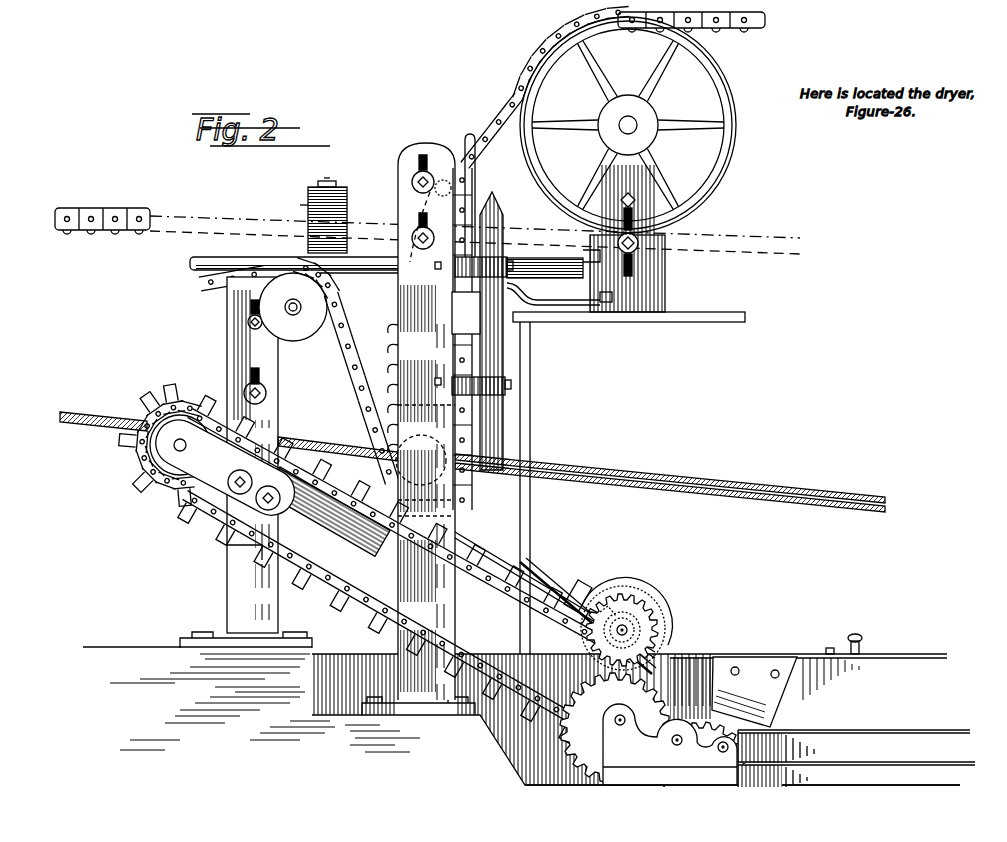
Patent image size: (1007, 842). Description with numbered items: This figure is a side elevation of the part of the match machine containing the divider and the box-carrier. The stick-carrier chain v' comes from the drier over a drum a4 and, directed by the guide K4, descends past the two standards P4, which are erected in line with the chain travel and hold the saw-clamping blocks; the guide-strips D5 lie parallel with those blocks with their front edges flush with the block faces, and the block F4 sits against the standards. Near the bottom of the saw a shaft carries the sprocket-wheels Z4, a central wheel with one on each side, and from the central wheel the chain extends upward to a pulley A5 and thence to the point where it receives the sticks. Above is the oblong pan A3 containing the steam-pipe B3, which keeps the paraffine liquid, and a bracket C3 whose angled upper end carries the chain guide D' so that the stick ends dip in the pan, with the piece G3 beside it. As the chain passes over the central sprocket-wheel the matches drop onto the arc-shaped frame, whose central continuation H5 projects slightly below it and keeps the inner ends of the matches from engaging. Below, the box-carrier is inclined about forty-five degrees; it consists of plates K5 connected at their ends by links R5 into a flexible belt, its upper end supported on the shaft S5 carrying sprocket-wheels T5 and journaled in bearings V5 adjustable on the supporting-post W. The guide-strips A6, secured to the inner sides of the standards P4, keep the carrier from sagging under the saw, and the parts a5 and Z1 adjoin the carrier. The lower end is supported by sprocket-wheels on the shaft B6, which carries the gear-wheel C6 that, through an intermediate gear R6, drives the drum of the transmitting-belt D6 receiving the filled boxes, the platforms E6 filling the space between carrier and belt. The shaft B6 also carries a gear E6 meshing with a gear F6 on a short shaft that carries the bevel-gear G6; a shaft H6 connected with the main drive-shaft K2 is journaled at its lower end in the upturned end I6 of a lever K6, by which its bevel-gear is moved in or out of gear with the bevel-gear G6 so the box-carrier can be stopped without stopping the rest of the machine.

The conveyor chain v' is at (427, 140).
The sprocket wheel a4 is at (598, 120).
The steam-pipe B3 is at (552, 251).
The guide arm G3 is at (559, 294).
The pan A3 is at (182, 275).
The standard or bracket C3 is at (347, 196).
The pipe D' is at (297, 213).
The support column W is at (246, 462).
The pulley A5 is at (300, 335).
The drive-shaft K2 is at (98, 402).
The guide-strips A6 is at (318, 533).
The standards P4 is at (421, 421).
The sprocket-wheels Z4 is at (425, 495).
The guide-strips D5 is at (482, 356).
The guide K4 is at (482, 295).
The clamp block F4 is at (481, 386).
The sprocket-wheels T5 is at (180, 418).
The links R5 is at (318, 611).
The bearings V5 is at (225, 468).
The shaft S5 is at (184, 450).
The central continuation H5 is at (352, 475).
The shaft H6 is at (572, 570).
The rail a5 is at (500, 543).
The rod Z1 is at (668, 652).
The plates K5 is at (332, 562).
The gear-wheel C6 is at (615, 728).
The pinion R6 is at (694, 713).
The shaft B6 is at (620, 725).
The gear E6 is at (672, 670).
The bevel-gear G6 is at (636, 594).
The upturned end I6 is at (622, 630).
The gear F6 is at (662, 622).
The lever K6 is at (758, 650).
The transmitting-belt D6 is at (862, 724).